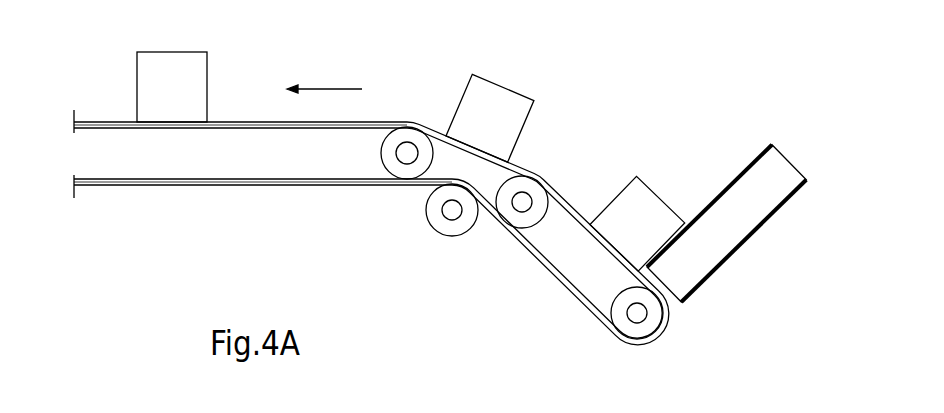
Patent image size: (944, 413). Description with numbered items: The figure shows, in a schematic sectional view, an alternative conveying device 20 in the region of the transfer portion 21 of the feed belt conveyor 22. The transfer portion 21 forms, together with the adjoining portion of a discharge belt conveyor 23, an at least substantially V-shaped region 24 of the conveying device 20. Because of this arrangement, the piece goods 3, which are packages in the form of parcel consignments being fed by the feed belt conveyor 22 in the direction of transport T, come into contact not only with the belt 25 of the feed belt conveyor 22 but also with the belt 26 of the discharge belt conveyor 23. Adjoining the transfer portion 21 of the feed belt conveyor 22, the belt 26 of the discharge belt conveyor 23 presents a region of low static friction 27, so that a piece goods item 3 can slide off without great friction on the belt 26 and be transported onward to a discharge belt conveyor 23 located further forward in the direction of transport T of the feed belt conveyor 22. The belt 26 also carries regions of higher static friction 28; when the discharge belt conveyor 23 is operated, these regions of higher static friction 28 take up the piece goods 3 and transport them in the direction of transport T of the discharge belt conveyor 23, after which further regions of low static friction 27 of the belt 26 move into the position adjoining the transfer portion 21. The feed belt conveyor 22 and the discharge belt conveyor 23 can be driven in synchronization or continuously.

The piece goods 3 is at (170, 62).
The conveying device 20 is at (452, 178).
The transfer portion 21 is at (738, 177).
The feed belt conveyor 22 is at (737, 230).
The discharge belt conveyor 23 is at (371, 211).
The V-shaped region 24 is at (664, 119).
The belt of the feed belt conveyor 25 is at (727, 183).
The belt of the discharge belt conveyor 26 is at (391, 98).
The region of low static friction 27 is at (266, 122).
The region of higher static friction 28 is at (142, 128).
The direction of transport T is at (333, 88).